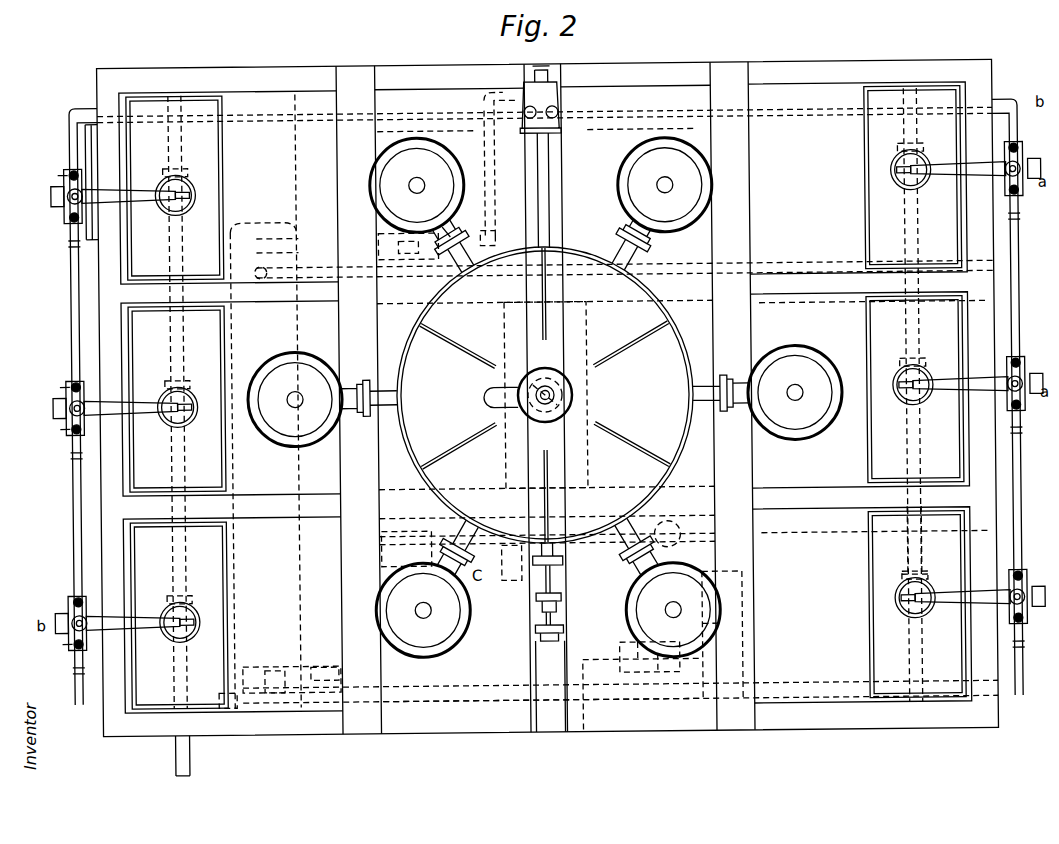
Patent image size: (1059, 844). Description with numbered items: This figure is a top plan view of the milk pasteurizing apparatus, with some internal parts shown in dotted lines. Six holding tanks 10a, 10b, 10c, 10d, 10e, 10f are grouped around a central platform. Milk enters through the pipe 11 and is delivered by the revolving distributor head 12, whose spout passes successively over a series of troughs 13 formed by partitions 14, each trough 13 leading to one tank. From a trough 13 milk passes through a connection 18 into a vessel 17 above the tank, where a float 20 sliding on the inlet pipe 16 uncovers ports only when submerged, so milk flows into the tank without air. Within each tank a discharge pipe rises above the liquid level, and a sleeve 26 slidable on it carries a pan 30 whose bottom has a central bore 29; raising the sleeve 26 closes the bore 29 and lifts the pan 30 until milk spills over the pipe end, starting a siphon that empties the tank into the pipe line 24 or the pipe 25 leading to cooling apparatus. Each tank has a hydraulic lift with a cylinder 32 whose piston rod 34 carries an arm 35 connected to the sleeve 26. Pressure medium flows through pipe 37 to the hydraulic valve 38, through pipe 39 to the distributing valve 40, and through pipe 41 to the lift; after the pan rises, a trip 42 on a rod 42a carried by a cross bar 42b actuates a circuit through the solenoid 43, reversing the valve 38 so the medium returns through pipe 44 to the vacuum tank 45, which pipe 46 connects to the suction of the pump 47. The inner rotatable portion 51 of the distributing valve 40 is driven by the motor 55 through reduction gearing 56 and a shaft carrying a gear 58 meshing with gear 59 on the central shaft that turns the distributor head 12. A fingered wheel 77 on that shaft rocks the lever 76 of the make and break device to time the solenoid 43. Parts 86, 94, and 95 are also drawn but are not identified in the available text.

The holding tank 10a is at (281, 401).
The holding tank 10b is at (427, 136).
The holding tank 10c is at (642, 133).
The holding tank 10d is at (874, 315).
The holding tank 10e is at (876, 548).
The holding tank 10f is at (543, 677).
The pipe 11 is at (560, 396).
The distributor head 12 is at (500, 392).
The trough 13 is at (544, 394).
The partition 14 is at (488, 355).
The inlet pipe 16 is at (504, 566).
The vessel 17 is at (395, 141).
The connection 18 is at (628, 530).
The float 20 is at (544, 397).
The pipe line 24 is at (172, 758).
The pipe 25 is at (918, 560).
The sleeve 26 is at (188, 180).
The central bore 29 is at (186, 210).
The pan 30 is at (875, 620).
The cylinder 32 is at (70, 202).
The piston rod 34 is at (68, 186).
The arm 35 is at (114, 186).
The pipe 37 is at (302, 246).
The hydraulic valve 38 is at (452, 232).
The pipe 39 is at (486, 160).
The distributing valve 40 is at (552, 92).
The pipe 41 is at (282, 118).
The trip 42 is at (1020, 150).
The rod 42a is at (70, 426).
The cross bar 42b is at (70, 168).
The solenoid 43 is at (408, 250).
The pipe 44 is at (316, 276).
The vacuum tank 45 is at (300, 456).
The pipe 46 is at (414, 540).
The pump 47 is at (676, 538).
The inner rotatable portion 51 is at (552, 190).
The motor 55 is at (680, 690).
The reduction gearing 56 is at (624, 648).
The gear 58 is at (562, 382).
The gear 59 is at (530, 416).
The lever 76 is at (528, 663).
The wheel 77 is at (532, 570).
The pipe section 86 is at (70, 240).
The pipe 94 is at (620, 682).
The valve 95 is at (318, 664).